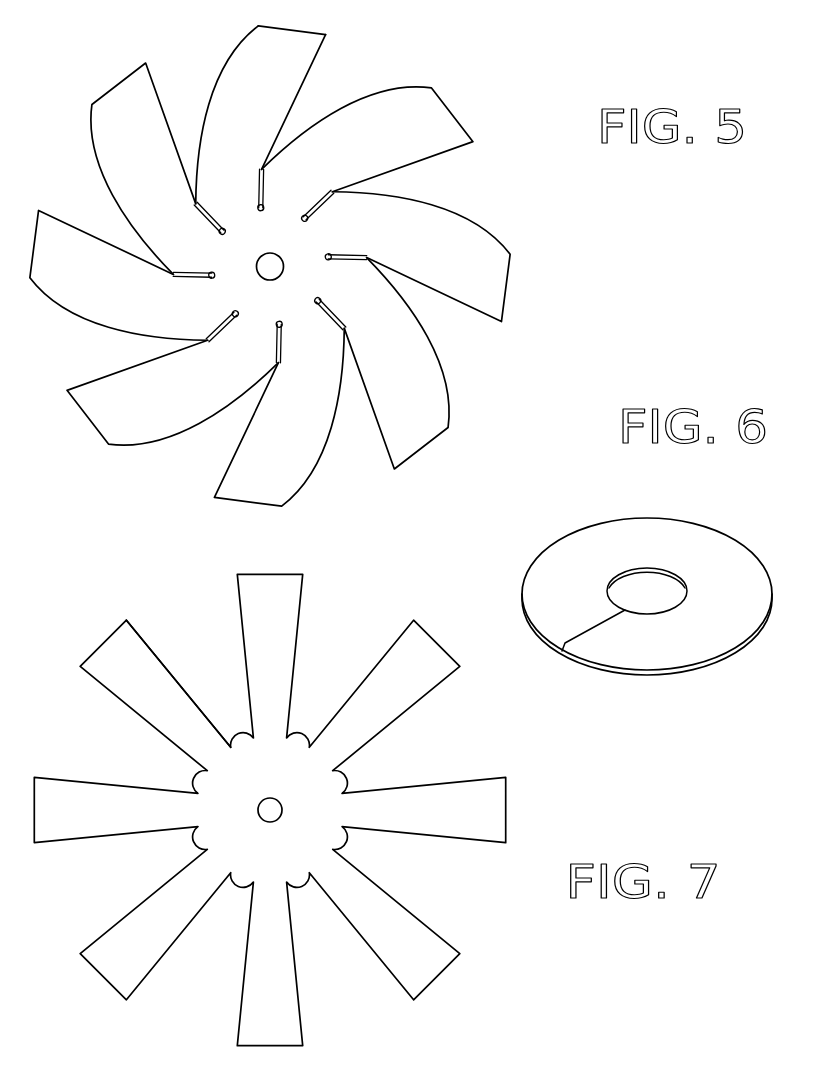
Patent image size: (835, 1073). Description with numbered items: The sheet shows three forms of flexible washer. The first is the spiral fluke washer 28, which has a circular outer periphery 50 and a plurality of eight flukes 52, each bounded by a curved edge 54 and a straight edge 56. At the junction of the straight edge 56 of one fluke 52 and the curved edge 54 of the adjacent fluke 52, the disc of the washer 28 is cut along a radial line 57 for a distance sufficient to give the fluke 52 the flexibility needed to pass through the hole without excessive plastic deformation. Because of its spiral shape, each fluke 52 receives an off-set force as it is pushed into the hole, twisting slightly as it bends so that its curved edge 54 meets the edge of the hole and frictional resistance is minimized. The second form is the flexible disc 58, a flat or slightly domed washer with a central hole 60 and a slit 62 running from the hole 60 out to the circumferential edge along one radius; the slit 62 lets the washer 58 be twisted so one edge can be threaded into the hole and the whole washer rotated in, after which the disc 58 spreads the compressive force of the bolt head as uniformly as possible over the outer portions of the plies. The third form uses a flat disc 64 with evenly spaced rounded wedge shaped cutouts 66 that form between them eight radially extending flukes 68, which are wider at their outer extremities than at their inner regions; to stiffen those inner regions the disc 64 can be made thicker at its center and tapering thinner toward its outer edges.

In FIG. 5, the washer 28 is at (270, 262).
In FIG. 5, the circular outer periphery 50 is at (278, 106).
In FIG. 5, the fluke 52 is at (130, 98).
In FIG. 5, the curved edge 54 is at (243, 47).
In FIG. 5, the straight edge 56 is at (307, 65).
In FIG. 5, the radial line 57 is at (320, 207).
In FIG. 6, the flexible disc 58 is at (658, 569).
In FIG. 6, the central hole 60 is at (630, 566).
In FIG. 6, the slit 62 is at (587, 632).
In FIG. 7, the flat disc 64 is at (269, 793).
In FIG. 7, the rounded wedge shaped cutouts 66 is at (172, 665).
In FIG. 7, the radially extending flukes 68 is at (258, 592).